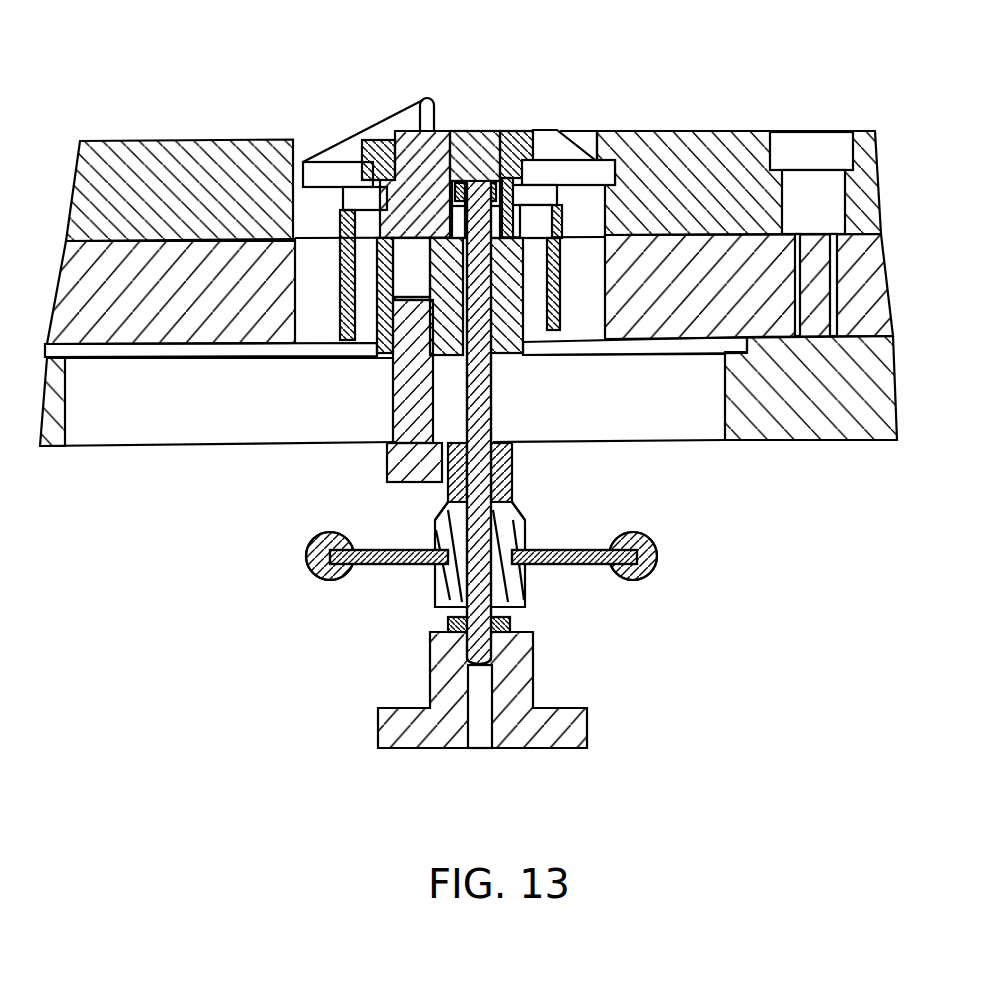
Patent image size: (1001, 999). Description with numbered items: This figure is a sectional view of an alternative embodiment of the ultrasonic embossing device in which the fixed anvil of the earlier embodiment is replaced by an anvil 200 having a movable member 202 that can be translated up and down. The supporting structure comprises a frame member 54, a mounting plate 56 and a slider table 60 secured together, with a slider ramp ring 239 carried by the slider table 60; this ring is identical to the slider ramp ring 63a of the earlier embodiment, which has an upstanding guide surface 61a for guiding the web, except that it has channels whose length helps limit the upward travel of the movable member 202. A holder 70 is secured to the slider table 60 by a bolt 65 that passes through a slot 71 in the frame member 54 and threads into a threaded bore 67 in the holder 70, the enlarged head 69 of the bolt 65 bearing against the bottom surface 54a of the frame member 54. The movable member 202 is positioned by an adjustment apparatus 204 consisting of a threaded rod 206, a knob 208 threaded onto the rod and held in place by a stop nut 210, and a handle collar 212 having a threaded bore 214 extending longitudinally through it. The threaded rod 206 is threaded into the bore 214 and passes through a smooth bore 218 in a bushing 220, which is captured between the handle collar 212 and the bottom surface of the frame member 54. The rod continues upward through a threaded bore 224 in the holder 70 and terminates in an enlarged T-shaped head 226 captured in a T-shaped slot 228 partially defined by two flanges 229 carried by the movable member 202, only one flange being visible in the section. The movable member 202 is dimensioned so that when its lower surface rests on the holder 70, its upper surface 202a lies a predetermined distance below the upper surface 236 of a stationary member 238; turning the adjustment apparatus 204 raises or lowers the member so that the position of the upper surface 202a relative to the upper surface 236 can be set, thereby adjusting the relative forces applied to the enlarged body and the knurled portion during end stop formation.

The frame member 54 is at (858, 422).
The bottom surface 54a is at (810, 440).
The mounting plate 56 is at (693, 308).
The slider table 60 is at (707, 133).
The upstanding guide surface 61a is at (437, 130).
The slider ramp ring 63a is at (562, 148).
The bolt 65 is at (395, 463).
The threaded bore 67 is at (342, 345).
The enlarged head 69 is at (398, 483).
The holder 70 is at (388, 343).
The slot 71 is at (168, 432).
The anvil 200 is at (388, 141).
The movable member 202 is at (515, 130).
The upper surface 202a is at (501, 130).
The adjustment apparatus 204 is at (370, 596).
The threaded rod 206 is at (510, 617).
The knob 208 is at (565, 703).
The stop nut 210 is at (450, 622).
The handle collar 212 is at (527, 520).
The threaded bore 214 is at (493, 583).
The smooth bore 218 is at (490, 460).
The bushing 220 is at (505, 490).
The threaded bore 224 is at (493, 357).
The T-shaped head 226 is at (538, 130).
The T-shaped slot 228 is at (393, 263).
The flange 229 is at (525, 218).
The upper surface 236 is at (464, 130).
The stationary member 238 is at (393, 140).
The slider ramp ring 239 is at (297, 142).